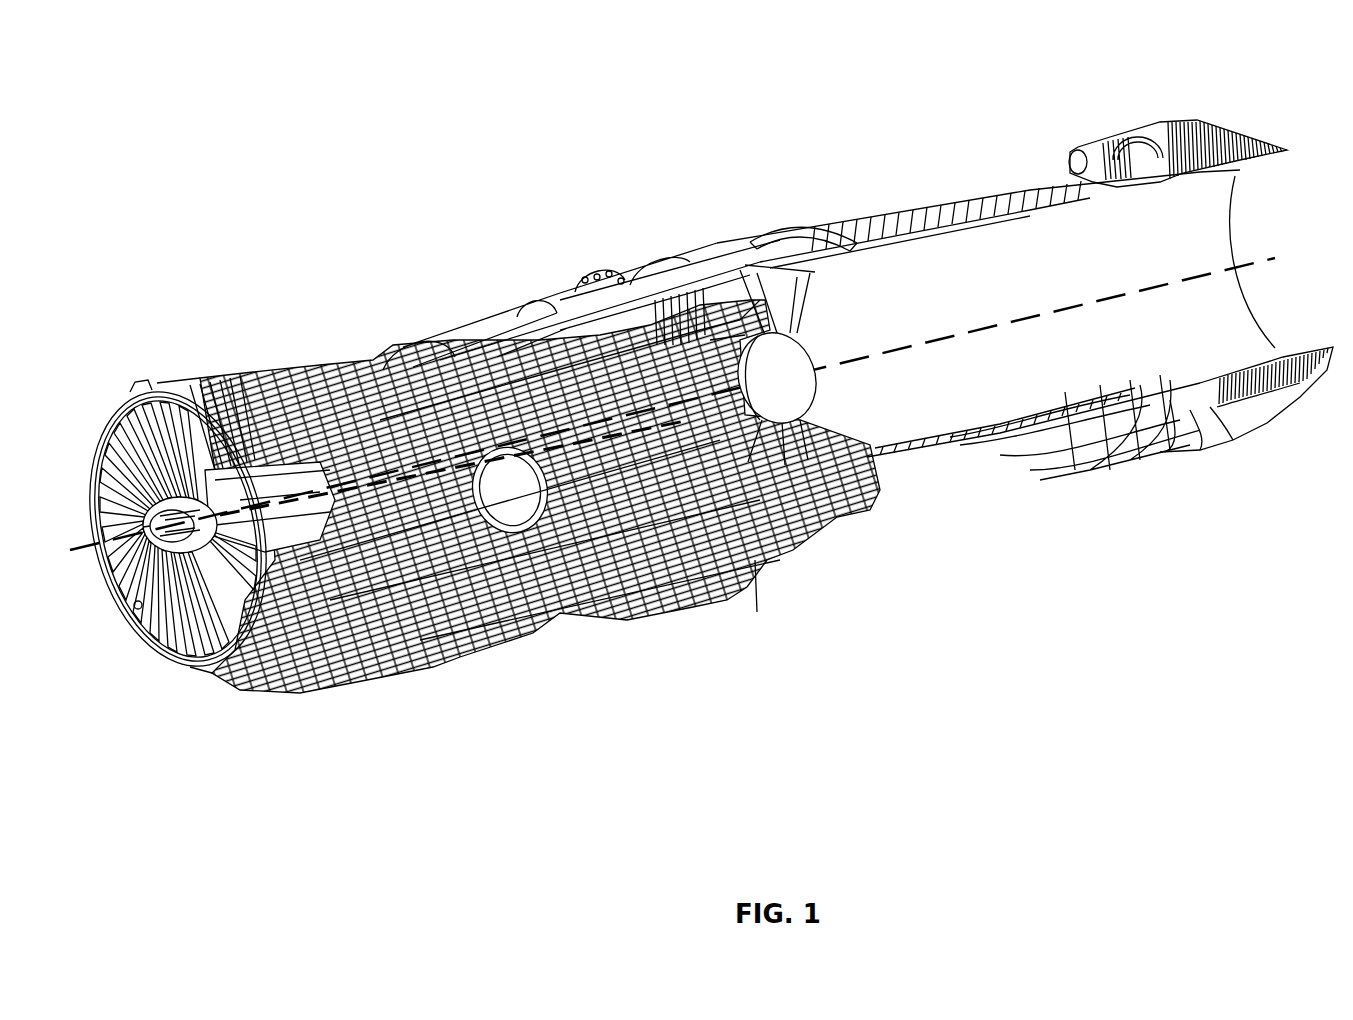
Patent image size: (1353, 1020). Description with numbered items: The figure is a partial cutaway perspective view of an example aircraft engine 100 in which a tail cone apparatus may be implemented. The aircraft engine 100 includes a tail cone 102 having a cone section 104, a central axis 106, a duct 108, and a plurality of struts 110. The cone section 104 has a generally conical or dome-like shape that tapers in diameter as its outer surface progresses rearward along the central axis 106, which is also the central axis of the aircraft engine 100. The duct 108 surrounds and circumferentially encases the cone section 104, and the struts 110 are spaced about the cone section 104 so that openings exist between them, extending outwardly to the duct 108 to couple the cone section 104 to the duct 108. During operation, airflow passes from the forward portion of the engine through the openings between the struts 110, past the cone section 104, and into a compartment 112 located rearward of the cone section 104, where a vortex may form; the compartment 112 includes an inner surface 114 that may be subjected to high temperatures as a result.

The aircraft engine 100 is at (962, 42).
The tail cone 102 is at (835, 315).
The cone section 104 is at (817, 387).
The central axis 106 is at (1253, 257).
The duct 108 is at (815, 228).
The struts 110 is at (720, 275).
The compartment 112 is at (968, 200).
The inner surface 114 is at (1020, 222).